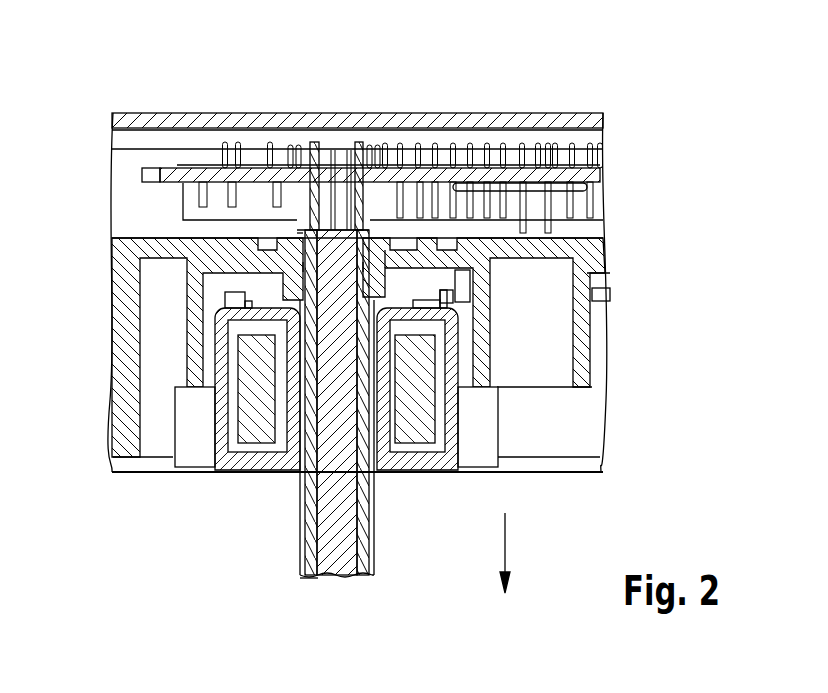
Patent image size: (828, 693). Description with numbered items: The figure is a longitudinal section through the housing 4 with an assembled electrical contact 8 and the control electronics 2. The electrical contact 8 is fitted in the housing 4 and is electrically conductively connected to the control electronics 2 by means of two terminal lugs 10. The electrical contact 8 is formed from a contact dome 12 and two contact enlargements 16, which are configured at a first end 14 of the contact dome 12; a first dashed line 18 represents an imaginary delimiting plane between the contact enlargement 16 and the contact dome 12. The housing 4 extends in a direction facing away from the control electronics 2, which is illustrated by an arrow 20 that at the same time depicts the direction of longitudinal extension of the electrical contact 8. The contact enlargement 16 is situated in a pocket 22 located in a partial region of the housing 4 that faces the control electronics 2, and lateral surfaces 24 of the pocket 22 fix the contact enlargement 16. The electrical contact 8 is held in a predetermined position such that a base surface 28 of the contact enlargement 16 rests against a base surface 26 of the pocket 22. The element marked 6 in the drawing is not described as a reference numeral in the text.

The control electronics 2 is at (593, 175).
The housing 4 is at (372, 530).
The housing 6 is at (594, 256).
The electrical contact 8 is at (303, 582).
The terminal lugs 10 is at (314, 140).
The contact dome 12 is at (338, 562).
The first end 14 is at (330, 225).
The contact enlargements 16 is at (388, 250).
The first dashed line 18 is at (300, 233).
The arrow 20 is at (505, 545).
The pocket 22 is at (315, 266).
The lateral surfaces 24 is at (352, 268).
The base surface of the pocket 26 is at (316, 250).
The base surface of the contact enlargement 28 is at (392, 327).